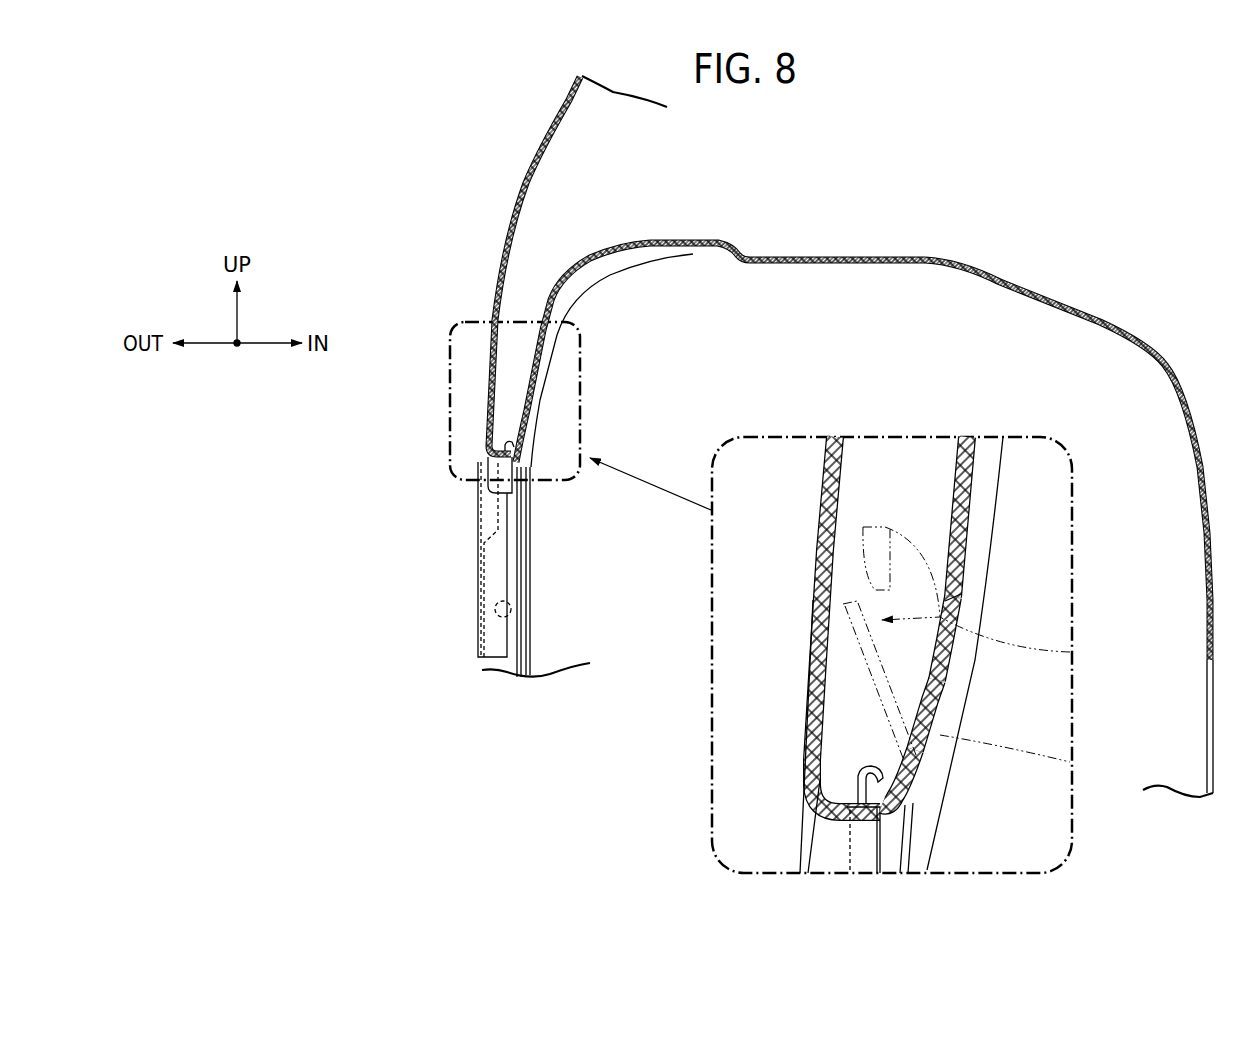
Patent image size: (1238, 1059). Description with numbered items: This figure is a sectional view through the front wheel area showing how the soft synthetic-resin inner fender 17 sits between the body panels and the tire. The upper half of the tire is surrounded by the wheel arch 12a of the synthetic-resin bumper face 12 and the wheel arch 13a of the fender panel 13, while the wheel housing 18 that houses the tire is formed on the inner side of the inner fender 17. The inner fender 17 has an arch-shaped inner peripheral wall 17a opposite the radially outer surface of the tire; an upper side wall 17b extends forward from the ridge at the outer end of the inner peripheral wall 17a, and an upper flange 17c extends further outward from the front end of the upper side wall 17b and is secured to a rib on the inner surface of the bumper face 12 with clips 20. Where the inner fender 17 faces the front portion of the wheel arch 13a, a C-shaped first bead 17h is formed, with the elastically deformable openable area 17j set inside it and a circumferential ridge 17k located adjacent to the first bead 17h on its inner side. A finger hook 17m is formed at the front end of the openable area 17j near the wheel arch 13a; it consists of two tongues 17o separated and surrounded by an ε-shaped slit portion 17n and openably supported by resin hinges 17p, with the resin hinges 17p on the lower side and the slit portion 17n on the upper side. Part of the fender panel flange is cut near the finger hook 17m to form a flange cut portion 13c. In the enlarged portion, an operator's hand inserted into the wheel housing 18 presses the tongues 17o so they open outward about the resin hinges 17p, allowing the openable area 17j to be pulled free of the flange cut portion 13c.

The bumper face 12 is at (476, 545).
The wheel arch 12a is at (490, 587).
The fender panel 13 is at (521, 184).
The wheel arch 13a is at (495, 468).
The flange cut portion 13c is at (517, 470).
The inner fender 17 is at (911, 252).
The inner peripheral wall 17a is at (867, 267).
The upper side wall 17b is at (525, 648).
The upper flange 17c is at (495, 663).
The first bead 17h is at (620, 267).
The openable area 17j is at (582, 270).
The ridge 17k is at (728, 247).
The finger hook 17m is at (554, 405).
The slit portion 17n is at (953, 597).
The tongues 17o is at (943, 673).
The resin hinges 17p is at (927, 763).
The wheel housing 18 is at (950, 387).
The clips 20 is at (513, 612).